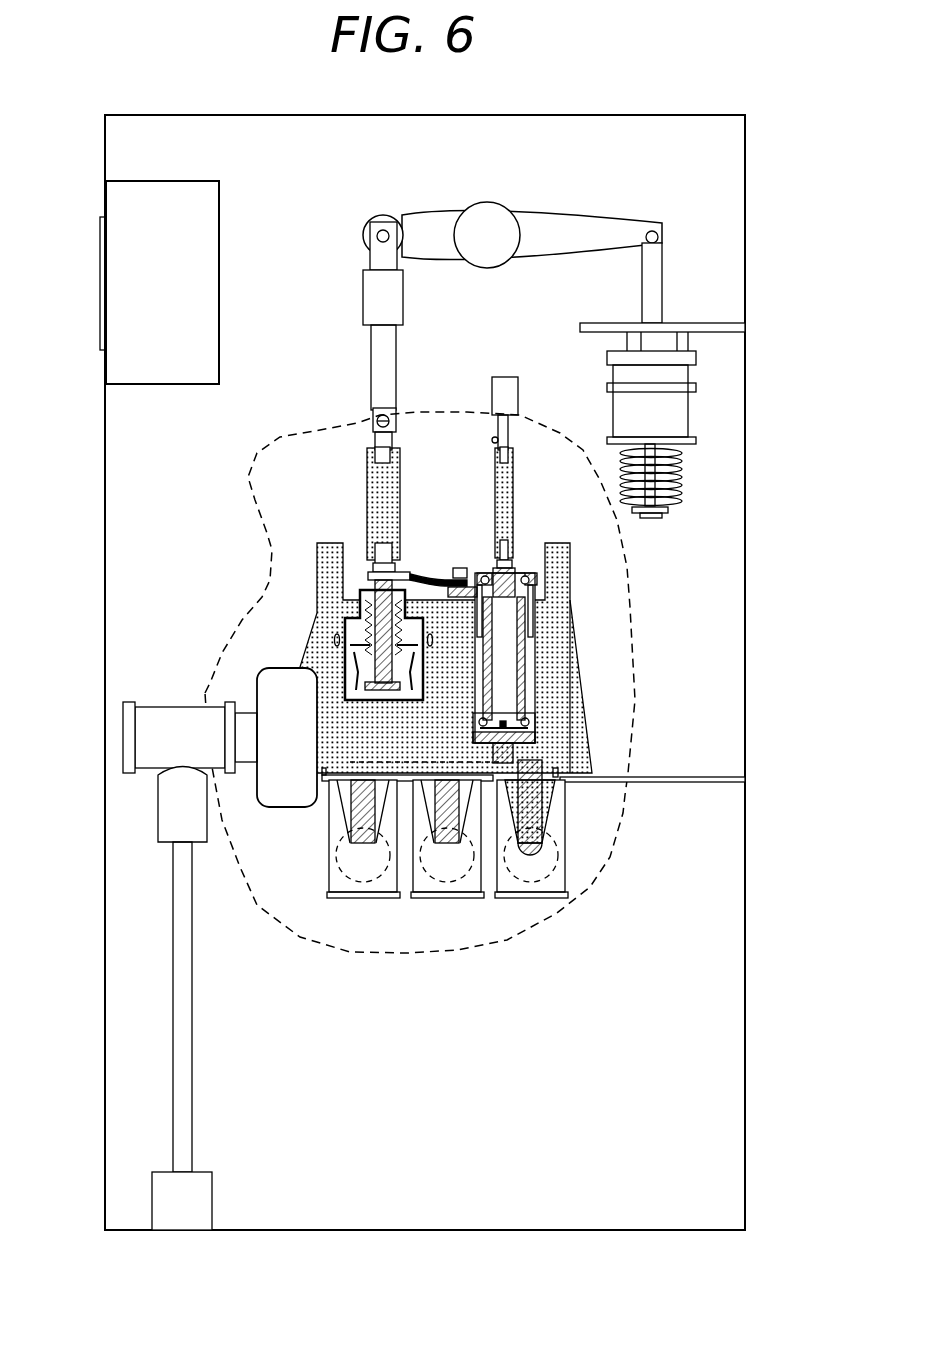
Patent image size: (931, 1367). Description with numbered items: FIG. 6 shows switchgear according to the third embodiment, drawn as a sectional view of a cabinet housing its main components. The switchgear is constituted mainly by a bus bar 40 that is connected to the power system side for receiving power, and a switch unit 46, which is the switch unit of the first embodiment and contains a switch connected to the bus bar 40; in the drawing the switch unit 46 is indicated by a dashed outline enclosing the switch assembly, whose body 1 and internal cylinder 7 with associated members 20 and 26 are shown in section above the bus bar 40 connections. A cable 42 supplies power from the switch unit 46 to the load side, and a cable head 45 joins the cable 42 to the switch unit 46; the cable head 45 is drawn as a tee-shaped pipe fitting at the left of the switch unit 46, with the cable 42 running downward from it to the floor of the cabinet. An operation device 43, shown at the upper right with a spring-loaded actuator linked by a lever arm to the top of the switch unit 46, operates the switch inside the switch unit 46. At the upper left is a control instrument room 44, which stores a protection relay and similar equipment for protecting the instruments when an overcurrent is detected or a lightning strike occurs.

The filling device body 1 is at (583, 722).
The cylinder 7 is at (477, 665).
The stopper member 20 is at (433, 573).
The lever 26 is at (413, 605).
The bus bar 40 is at (530, 830).
The cable 42 is at (187, 1030).
The operation device 43 is at (673, 413).
The control instrument room 44 is at (130, 269).
The cable head 45 is at (153, 707).
The switch unit 46 is at (598, 873).